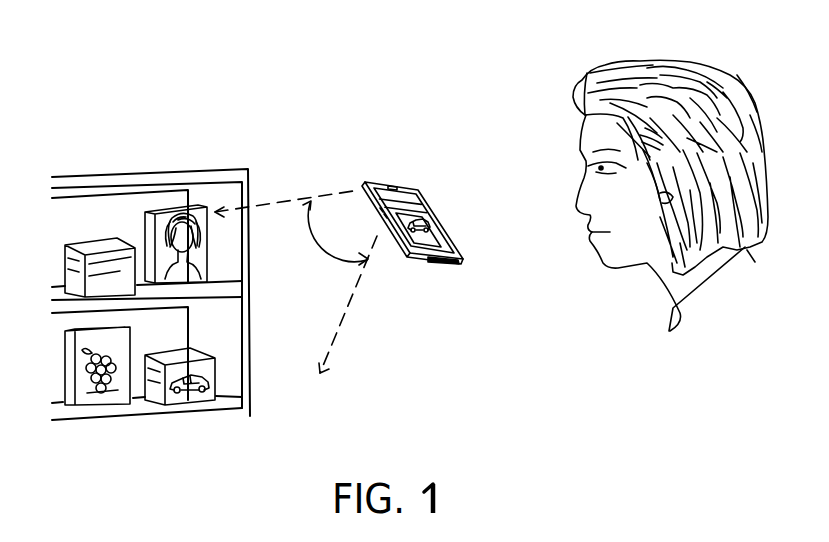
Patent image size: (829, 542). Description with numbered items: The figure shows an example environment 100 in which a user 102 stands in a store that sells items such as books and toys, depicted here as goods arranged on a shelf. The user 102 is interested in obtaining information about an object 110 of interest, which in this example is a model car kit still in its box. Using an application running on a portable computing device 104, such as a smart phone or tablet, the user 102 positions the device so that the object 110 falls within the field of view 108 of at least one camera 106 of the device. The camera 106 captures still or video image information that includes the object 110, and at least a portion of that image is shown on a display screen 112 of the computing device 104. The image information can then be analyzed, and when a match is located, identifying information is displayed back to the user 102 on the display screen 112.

The environment 100 is at (62, 86).
The user 102 is at (540, 111).
The computing device 104 is at (417, 262).
The camera 106 is at (393, 187).
The field of view 108 is at (296, 281).
The object 110 is at (188, 402).
The display screen 112 is at (441, 223).